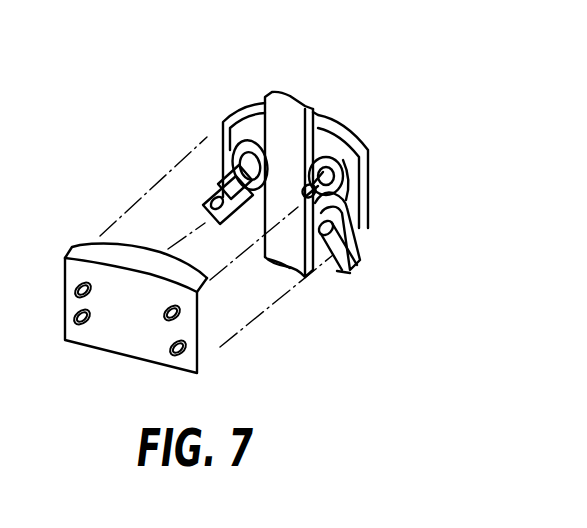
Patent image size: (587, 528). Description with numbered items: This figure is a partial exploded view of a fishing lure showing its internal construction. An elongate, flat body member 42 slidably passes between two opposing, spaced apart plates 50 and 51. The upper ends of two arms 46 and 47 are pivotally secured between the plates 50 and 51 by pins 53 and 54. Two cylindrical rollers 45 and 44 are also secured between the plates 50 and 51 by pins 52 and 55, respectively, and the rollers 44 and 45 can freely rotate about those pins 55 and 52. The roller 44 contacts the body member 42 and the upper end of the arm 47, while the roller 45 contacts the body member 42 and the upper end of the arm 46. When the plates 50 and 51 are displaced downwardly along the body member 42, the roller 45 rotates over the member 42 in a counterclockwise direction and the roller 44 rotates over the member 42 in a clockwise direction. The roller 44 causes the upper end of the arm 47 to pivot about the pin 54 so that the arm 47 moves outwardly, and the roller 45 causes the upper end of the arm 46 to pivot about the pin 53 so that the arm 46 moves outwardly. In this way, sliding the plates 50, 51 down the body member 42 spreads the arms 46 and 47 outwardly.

The body member 42 is at (313, 112).
The cylindrical roller 44 is at (343, 177).
The cylindrical roller 45 is at (254, 140).
The arm 46 is at (212, 196).
The arm 47 is at (360, 282).
The plate 50 is at (100, 337).
The plate 51 is at (349, 140).
The pin 52 is at (224, 126).
The pin 53 is at (236, 216).
The pin 54 is at (300, 257).
The pin 55 is at (292, 198).